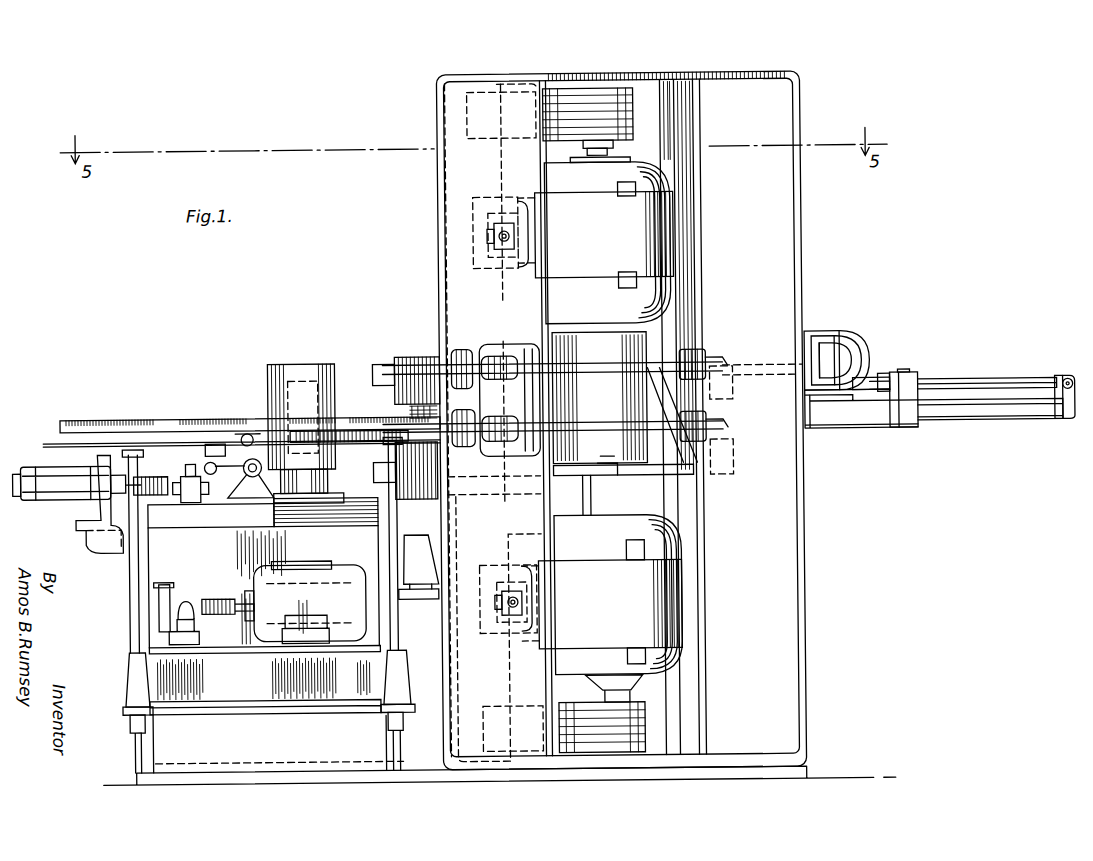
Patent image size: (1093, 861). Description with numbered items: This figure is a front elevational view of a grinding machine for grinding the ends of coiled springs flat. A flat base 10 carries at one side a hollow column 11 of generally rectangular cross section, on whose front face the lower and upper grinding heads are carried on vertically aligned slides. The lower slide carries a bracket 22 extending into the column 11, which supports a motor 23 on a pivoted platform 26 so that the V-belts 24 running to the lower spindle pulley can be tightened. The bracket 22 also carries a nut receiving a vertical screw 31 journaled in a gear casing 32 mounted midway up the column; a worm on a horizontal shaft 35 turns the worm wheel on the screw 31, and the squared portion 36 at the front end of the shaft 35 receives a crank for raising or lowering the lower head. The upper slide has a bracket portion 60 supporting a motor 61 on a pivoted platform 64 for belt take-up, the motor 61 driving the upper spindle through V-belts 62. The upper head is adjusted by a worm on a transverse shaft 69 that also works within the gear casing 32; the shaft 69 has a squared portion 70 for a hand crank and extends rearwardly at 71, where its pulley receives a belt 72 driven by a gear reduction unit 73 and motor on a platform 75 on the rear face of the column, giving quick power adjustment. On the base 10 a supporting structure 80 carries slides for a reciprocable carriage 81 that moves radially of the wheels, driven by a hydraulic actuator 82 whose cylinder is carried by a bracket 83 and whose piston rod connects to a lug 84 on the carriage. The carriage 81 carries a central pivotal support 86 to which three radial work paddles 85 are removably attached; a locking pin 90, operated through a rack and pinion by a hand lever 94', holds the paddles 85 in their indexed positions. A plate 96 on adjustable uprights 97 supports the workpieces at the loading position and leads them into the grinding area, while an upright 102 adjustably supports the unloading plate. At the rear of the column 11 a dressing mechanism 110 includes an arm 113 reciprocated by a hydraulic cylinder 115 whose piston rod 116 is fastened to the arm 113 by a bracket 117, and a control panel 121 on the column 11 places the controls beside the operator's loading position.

The flat base 10 is at (282, 780).
The hollow column 11 is at (804, 601).
The bracket 22 is at (495, 635).
The motor 23 is at (676, 663).
The V-belts 24 is at (613, 737).
The platform 26 is at (530, 635).
The screw 31 is at (588, 502).
The gear casing 32 is at (628, 453).
The horizontal shaft 35 is at (521, 462).
The squared portion 36 is at (451, 440).
The bracket portion 60 is at (475, 230).
The motor 61 is at (665, 239).
The V-belts 62 is at (597, 100).
The platform 64 is at (532, 208).
The transversely extending shaft 69 is at (652, 364).
The squared portion 70 is at (448, 360).
The rearward shaft extension 71 is at (758, 366).
The belt 72 is at (840, 333).
The gear reduction unit 73 is at (830, 380).
The platform 75 is at (825, 408).
The supporting structure 80 is at (168, 740).
The reciprocable carriage 81 is at (197, 523).
The hydraulic actuator 82 is at (80, 492).
The bracket 83 is at (100, 552).
The lug 84 is at (190, 472).
The paddles 85 is at (365, 420).
The central pivotal support 86 is at (307, 364).
The pin 90 is at (255, 434).
The hand lever 94' is at (216, 419).
The plate 96 is at (58, 439).
The uprights 97 is at (398, 630).
The upright 102 is at (423, 515).
The dressing mechanism 110 is at (931, 371).
The arm 113 is at (983, 418).
The cylinder 115 is at (904, 430).
The piston rod 116 is at (968, 389).
The bracket 117 is at (1065, 407).
The control panel 121 is at (502, 352).